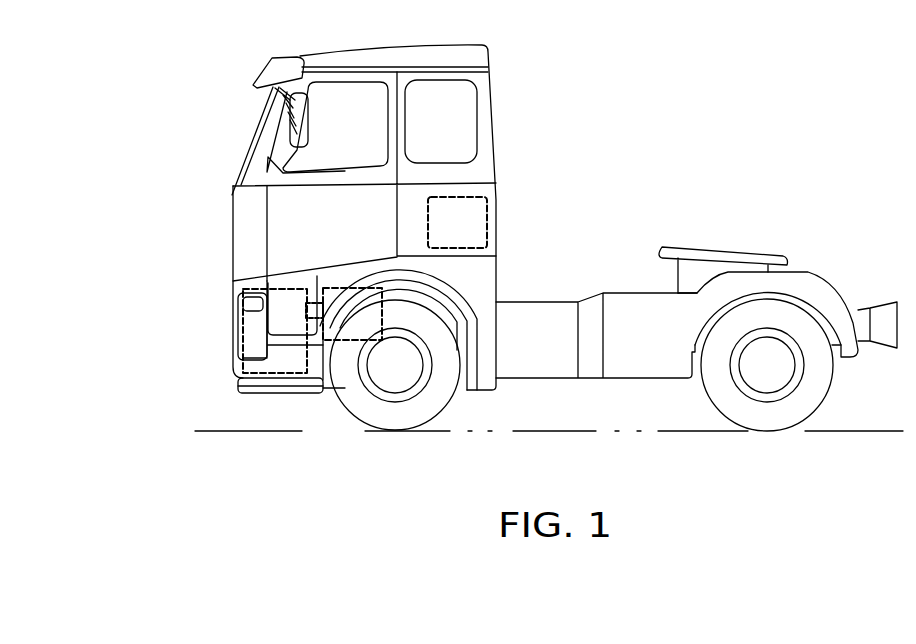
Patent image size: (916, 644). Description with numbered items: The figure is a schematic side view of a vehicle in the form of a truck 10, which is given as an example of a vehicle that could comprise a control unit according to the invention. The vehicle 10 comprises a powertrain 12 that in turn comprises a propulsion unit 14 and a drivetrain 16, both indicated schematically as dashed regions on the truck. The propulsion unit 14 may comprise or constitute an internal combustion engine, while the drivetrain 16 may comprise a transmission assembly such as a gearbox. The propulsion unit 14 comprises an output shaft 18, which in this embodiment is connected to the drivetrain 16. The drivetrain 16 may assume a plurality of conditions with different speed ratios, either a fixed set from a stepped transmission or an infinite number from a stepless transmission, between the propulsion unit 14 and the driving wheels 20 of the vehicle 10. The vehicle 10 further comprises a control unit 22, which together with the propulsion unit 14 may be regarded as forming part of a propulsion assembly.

The truck 10 is at (584, 96).
The powertrain 12 is at (214, 280).
The propulsion unit 14 is at (240, 372).
The drivetrain 16 is at (351, 340).
The output shaft 18 is at (312, 303).
The driving wheels 20 is at (772, 433).
The control unit 22 is at (489, 214).